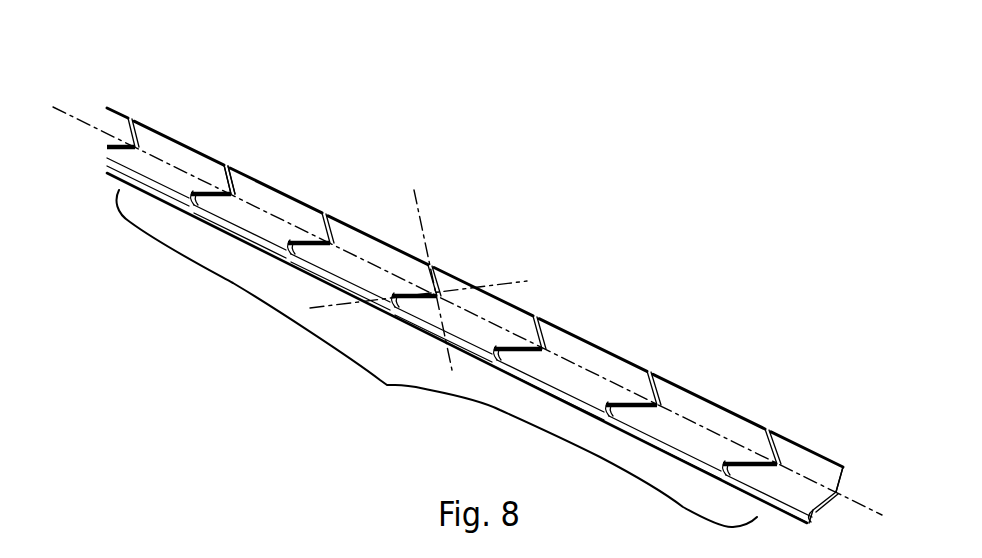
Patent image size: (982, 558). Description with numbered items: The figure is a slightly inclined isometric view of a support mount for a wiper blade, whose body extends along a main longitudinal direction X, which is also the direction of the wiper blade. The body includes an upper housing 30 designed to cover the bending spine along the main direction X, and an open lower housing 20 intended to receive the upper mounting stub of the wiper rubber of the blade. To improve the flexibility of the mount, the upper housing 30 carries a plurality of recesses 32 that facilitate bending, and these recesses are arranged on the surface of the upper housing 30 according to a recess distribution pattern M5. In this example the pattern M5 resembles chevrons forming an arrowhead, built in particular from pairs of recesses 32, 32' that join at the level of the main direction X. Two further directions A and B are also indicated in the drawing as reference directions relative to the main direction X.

The open lower housing 20 is at (857, 488).
The upper housing 30 is at (848, 461).
The recess 32 is at (251, 133).
The recess 32' is at (442, 305).
The main direction X is at (75, 117).
The transverse axis A is at (518, 282).
The vertical axis B is at (416, 199).
The recess distribution pattern M5 is at (437, 358).